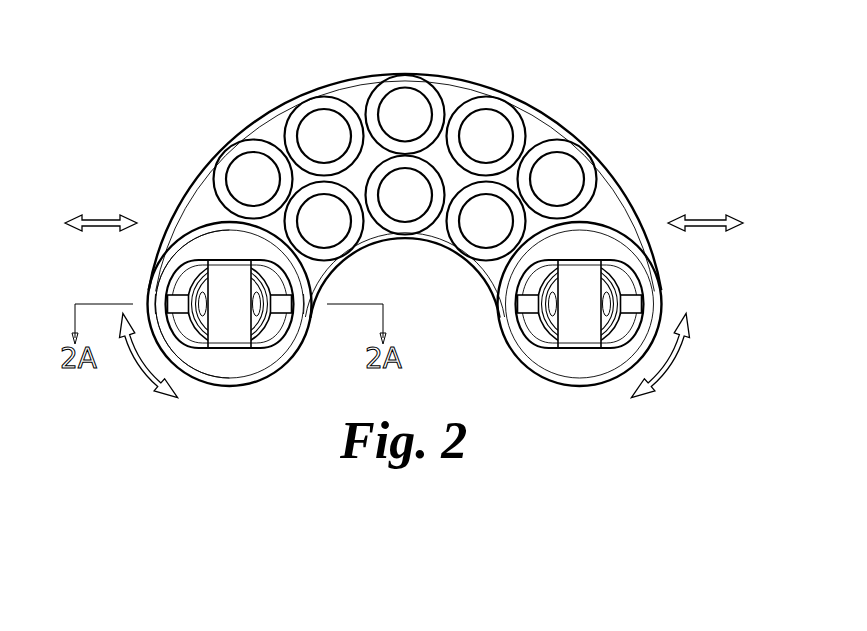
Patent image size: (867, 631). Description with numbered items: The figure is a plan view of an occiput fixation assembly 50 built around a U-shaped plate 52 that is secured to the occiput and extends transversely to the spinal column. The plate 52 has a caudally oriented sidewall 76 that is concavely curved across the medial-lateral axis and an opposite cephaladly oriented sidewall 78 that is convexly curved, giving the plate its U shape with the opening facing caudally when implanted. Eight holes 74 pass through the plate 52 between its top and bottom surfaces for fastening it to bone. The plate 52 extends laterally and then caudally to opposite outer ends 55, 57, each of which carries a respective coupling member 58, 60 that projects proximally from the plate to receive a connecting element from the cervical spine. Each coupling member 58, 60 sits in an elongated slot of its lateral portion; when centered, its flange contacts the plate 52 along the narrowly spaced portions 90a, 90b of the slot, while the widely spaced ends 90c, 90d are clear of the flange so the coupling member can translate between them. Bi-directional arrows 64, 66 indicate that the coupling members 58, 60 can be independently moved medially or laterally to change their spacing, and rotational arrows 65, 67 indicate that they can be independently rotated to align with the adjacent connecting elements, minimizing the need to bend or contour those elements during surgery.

The occiput fixation assembly 50 is at (390, 246).
The plate 52 is at (575, 111).
The outer end 55 is at (211, 305).
The outer end 57 is at (620, 332).
The coupling member 58 is at (220, 315).
The coupling member 60 is at (620, 335).
The bi-directional arrow 64 is at (96, 216).
The rotational arrow 65 is at (137, 365).
The bi-directional arrow 66 is at (712, 216).
The rotational arrow 67 is at (672, 365).
The holes 74 is at (404, 103).
The caudally oriented sidewall 76 is at (401, 241).
The cephaladly oriented sidewall 78 is at (343, 73).
The narrowly spaced portion of slot 90a is at (193, 216).
The narrowly spaced portion of slot 90b is at (204, 369).
The widely spaced end of slot 90c is at (101, 292).
The widely spaced end of slot 90d is at (343, 294).